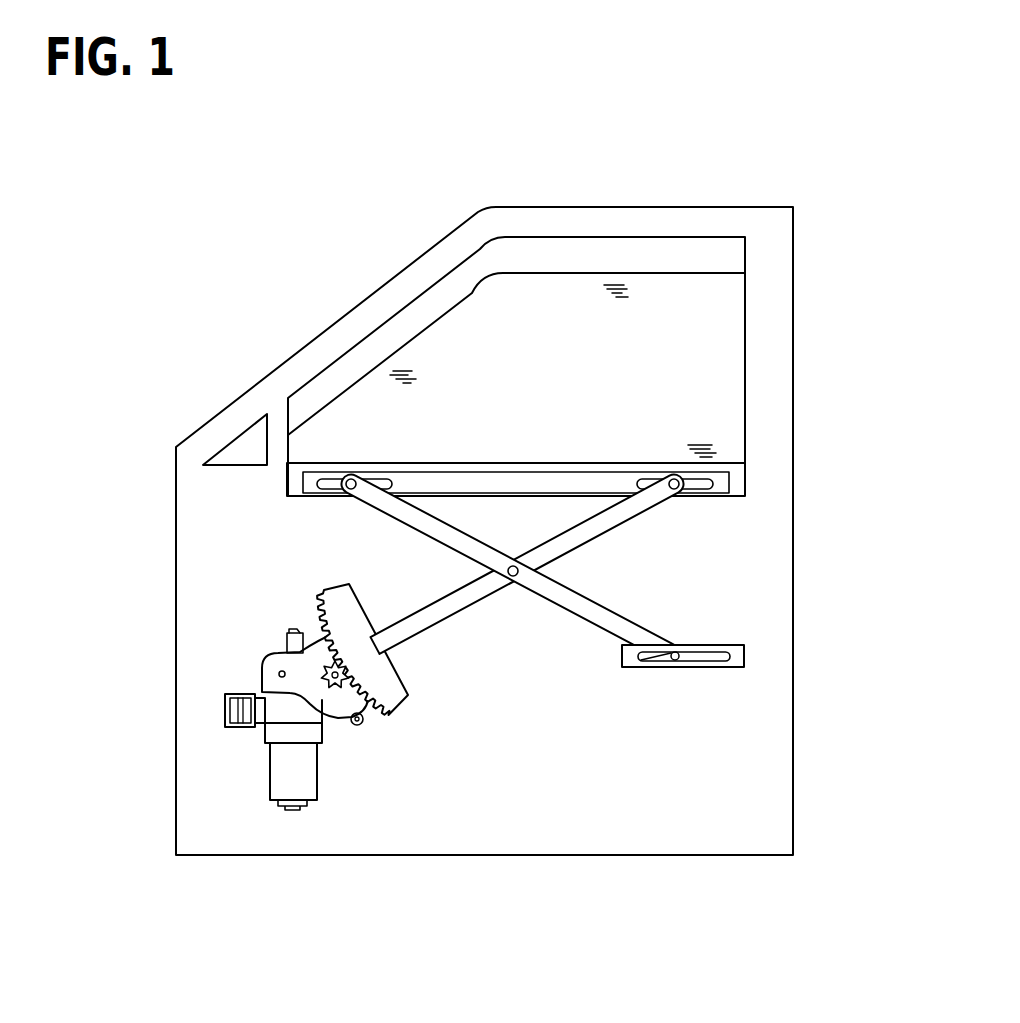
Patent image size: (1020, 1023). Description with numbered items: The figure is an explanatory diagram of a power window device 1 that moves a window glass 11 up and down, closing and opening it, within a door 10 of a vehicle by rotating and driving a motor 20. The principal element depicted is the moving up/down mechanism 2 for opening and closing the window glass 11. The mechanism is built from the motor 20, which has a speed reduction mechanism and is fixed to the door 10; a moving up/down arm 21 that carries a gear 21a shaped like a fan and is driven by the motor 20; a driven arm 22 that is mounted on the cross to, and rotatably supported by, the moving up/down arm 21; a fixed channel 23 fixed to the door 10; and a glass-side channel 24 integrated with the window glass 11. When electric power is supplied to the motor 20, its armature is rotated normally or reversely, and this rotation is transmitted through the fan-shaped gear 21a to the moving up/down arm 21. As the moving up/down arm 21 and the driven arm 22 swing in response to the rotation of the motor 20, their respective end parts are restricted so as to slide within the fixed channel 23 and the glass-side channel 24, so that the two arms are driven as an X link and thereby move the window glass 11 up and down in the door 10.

The power window device 1 is at (246, 310).
The moving up/down mechanism 2 is at (226, 609).
The door 10 is at (767, 565).
The window glass 11 is at (545, 285).
The motor 20 is at (278, 780).
The moving up/down arm 21 is at (611, 525).
The gear 21a is at (405, 708).
The driven arm 22 is at (565, 600).
The fixed channel 23 is at (703, 665).
The glass-side channel 24 is at (720, 479).